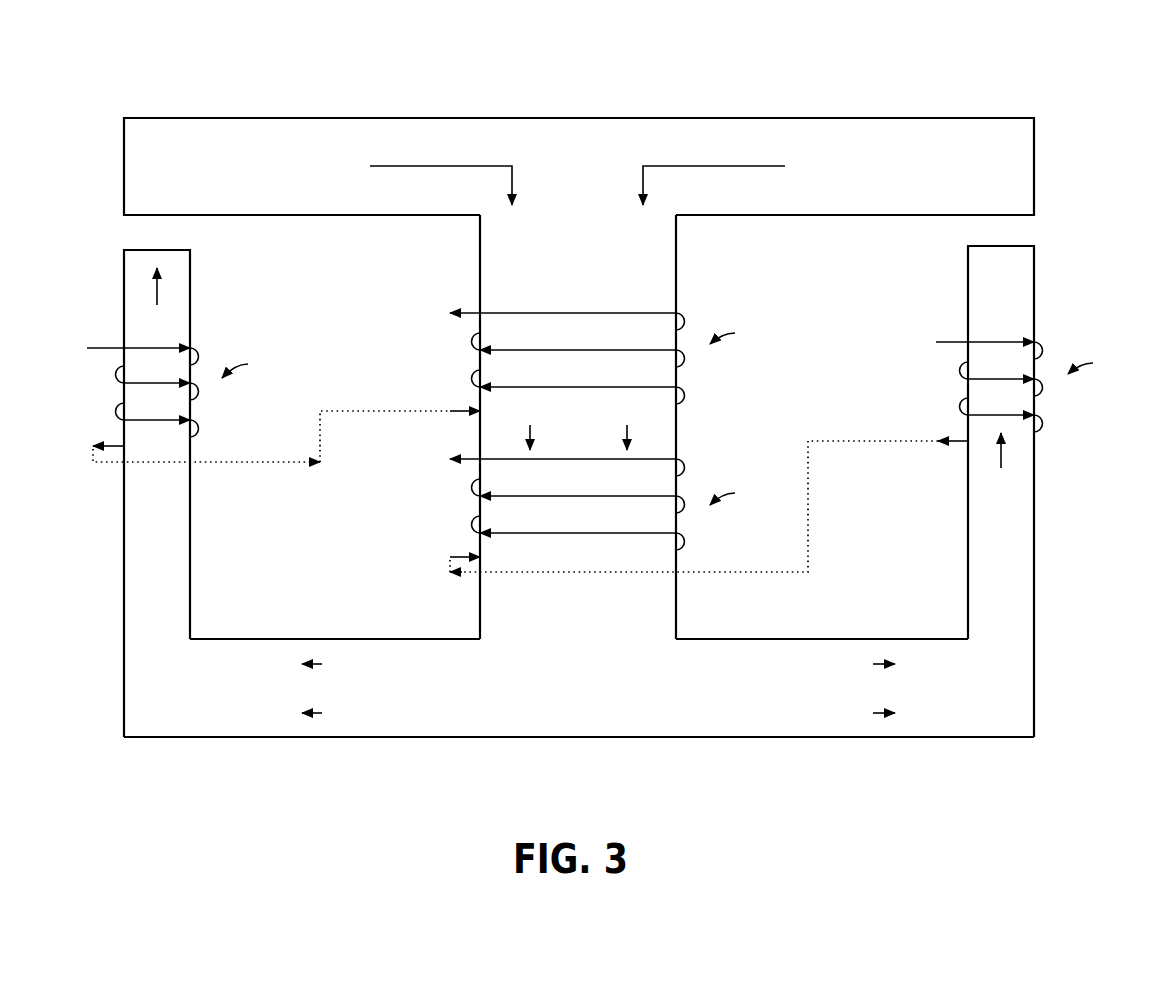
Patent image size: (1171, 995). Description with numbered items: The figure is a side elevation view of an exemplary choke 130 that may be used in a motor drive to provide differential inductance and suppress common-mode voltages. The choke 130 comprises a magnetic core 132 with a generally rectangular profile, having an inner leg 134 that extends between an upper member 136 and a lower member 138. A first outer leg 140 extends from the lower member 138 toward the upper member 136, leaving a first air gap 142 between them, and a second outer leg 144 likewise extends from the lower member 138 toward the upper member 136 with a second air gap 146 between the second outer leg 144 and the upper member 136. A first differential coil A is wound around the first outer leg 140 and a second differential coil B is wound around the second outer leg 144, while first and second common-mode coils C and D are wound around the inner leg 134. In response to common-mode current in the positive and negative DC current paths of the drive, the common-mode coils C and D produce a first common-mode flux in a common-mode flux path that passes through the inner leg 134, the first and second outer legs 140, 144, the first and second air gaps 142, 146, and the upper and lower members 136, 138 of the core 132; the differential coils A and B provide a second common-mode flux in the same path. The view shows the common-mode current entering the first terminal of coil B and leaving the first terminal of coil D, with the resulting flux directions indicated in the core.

The choke 130 is at (838, 48).
The magnetic core 132 is at (790, 132).
The inner leg 134 is at (676, 262).
The upper member 136 is at (938, 115).
The lower member 138 is at (353, 737).
The first outer leg 140 is at (124, 548).
The first air gap 142 is at (120, 232).
The second outer leg 144 is at (1035, 535).
The second air gap 146 is at (1035, 225).